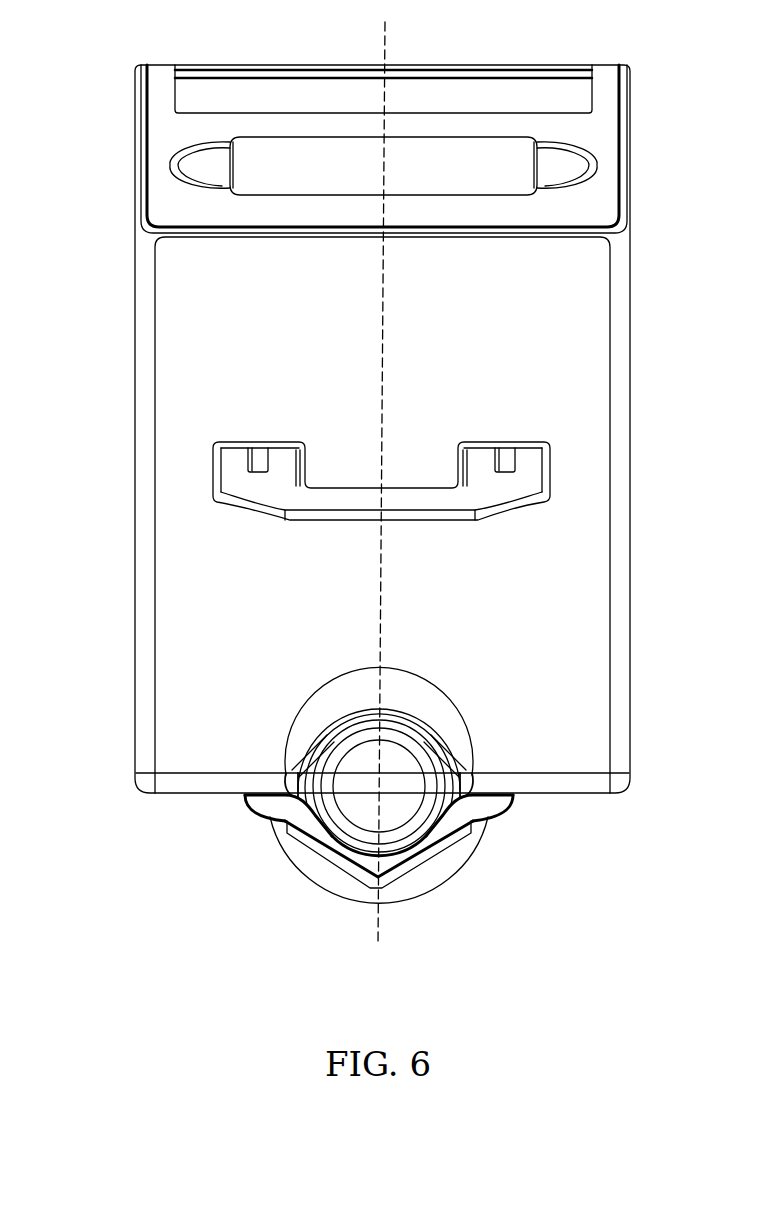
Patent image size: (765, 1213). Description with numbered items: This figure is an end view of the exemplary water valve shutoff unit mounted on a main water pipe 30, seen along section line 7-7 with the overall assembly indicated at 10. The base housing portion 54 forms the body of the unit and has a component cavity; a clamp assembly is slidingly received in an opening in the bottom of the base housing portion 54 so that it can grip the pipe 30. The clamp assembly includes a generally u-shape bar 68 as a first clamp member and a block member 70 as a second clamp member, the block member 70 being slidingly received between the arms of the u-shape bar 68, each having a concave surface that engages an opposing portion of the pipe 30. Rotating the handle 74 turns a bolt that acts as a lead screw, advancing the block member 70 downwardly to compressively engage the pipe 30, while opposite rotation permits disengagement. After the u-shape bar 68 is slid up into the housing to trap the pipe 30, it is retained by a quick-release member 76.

The section line 7- 7 is at (385, 22).
The storage assembly 10 is at (86, 48).
The base housing portion 54 is at (595, 410).
The handle 74 is at (455, 181).
The quick-release member 76 is at (442, 503).
The block member 70 is at (430, 742).
The u-shape bar 68 is at (256, 800).
The main water pipe 30 is at (335, 806).